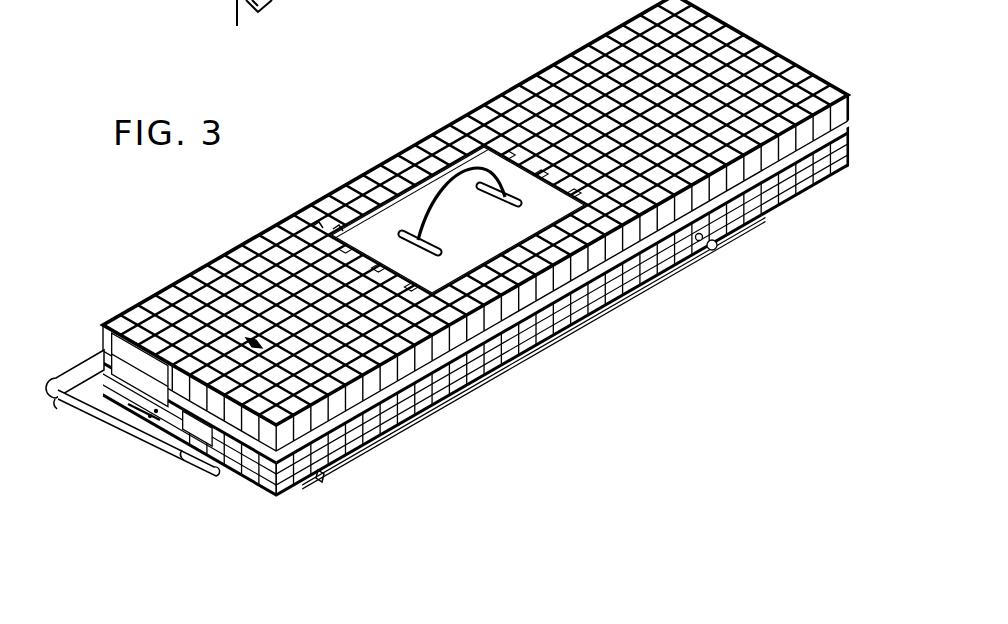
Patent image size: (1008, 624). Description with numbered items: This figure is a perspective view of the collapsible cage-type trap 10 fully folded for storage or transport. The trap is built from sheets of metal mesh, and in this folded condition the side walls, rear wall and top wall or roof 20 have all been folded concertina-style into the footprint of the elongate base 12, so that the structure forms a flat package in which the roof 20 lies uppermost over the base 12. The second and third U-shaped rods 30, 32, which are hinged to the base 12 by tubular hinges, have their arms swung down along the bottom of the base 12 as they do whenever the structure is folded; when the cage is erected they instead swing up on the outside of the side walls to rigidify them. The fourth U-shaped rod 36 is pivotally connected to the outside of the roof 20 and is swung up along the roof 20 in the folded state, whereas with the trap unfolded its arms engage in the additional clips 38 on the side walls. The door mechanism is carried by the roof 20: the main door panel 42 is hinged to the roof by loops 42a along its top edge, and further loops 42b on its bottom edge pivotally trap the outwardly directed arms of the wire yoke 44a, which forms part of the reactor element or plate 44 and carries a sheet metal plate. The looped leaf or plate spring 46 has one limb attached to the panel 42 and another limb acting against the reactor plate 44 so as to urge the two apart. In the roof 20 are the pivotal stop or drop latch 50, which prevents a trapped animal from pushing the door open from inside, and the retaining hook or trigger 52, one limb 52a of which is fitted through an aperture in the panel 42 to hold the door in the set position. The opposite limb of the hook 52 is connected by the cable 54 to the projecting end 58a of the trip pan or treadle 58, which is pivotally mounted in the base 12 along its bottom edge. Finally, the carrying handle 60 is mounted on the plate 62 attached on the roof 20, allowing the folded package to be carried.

The collapsible cage-type trap 10 is at (426, 123).
The elongate base 12 is at (533, 348).
The top wall or roof 20 is at (600, 67).
The second U-shaped rod 30 is at (619, 305).
The third U-shaped rod 32 is at (423, 420).
The fourth U-shaped rod 36 is at (214, 250).
The additional clips 38 is at (249, 28).
The main door panel 42 is at (97, 366).
The loops 42a is at (338, 232).
The further loops 42b is at (57, 408).
The reactor element or plate 44 is at (140, 356).
The wire yoke 44a is at (194, 430).
The looped leaf or plate spring 46 is at (143, 414).
The pivotal stop or drop latch 50 is at (250, 344).
The retaining hook or trigger 52 is at (378, 442).
The limb of the hook 52a is at (322, 481).
The cable 54 is at (790, 198).
The trip pan or treadle 58 is at (660, 274).
The projecting end 58a is at (714, 251).
The carrying handle 60 is at (463, 166).
The plate 62 is at (407, 203).